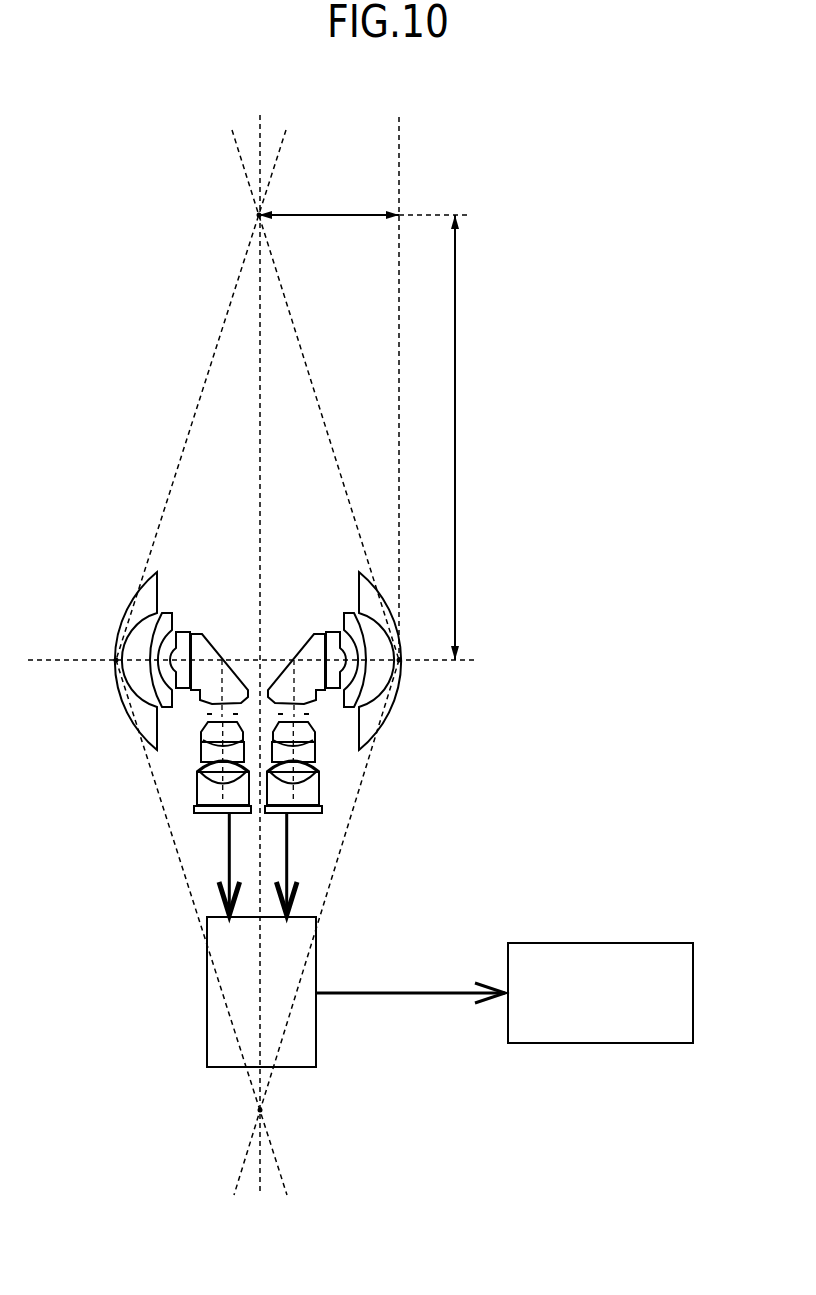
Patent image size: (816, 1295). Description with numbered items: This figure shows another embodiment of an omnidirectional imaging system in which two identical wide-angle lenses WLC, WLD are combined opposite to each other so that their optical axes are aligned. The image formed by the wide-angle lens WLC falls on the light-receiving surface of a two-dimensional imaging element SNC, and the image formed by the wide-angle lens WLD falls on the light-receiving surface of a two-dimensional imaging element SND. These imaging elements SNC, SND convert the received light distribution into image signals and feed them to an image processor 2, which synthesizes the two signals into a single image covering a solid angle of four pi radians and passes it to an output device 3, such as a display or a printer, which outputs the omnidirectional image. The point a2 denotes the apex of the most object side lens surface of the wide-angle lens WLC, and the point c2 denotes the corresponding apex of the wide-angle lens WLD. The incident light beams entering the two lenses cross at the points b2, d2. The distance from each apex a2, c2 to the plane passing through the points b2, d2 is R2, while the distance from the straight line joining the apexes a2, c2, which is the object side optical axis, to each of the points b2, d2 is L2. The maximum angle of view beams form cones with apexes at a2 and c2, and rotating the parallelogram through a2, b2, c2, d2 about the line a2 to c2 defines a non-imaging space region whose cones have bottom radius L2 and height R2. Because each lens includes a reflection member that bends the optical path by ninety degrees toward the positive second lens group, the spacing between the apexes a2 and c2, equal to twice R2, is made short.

The image processor 2 is at (261, 992).
The output device 3 is at (600, 993).
The wide-angle lens WLD is at (203, 612).
The wide-angle lens WLC is at (334, 642).
The two-dimensional imaging element SND is at (211, 813).
The two-dimensional imaging element SNC is at (305, 813).
The apex of the most object side lens surface of wide-angle lens WLC a2 is at (400, 660).
The crossing point of incident light beams b2 is at (259, 215).
The apex of the most object side lens surface of wide-angle lens WLD c2 is at (116, 660).
The crossing point of incident light beams d2 is at (265, 1110).
The distance from lens apex to plane through crossing points R2 is at (329, 202).
The distance from optical axis to crossing points L2 is at (469, 437).